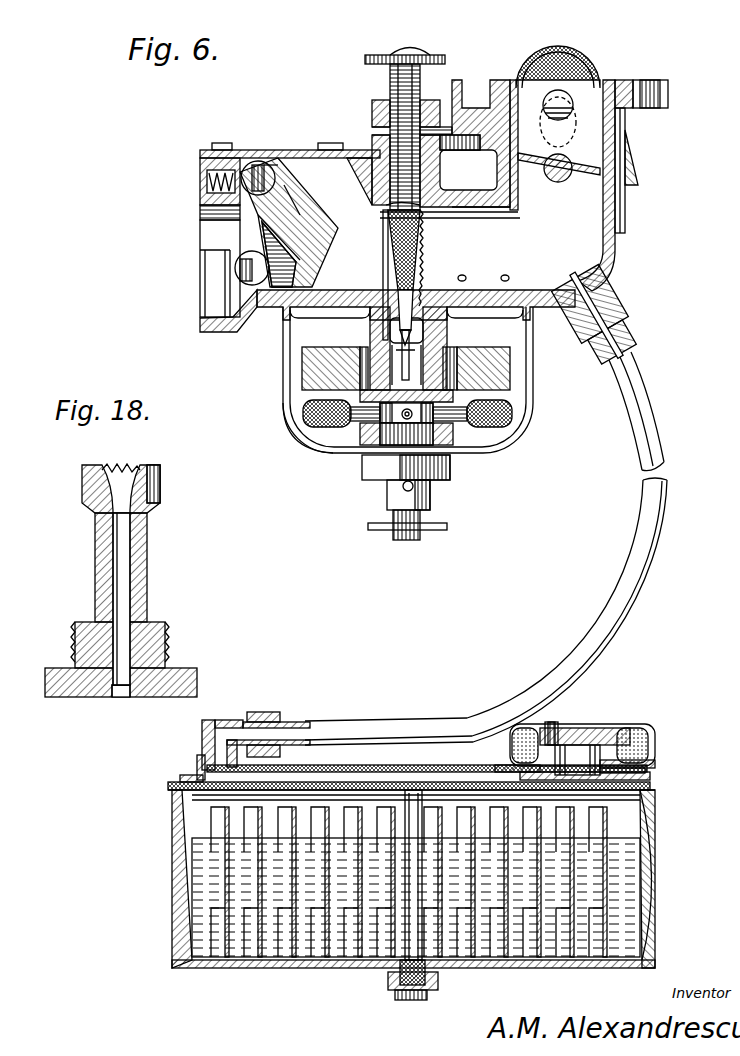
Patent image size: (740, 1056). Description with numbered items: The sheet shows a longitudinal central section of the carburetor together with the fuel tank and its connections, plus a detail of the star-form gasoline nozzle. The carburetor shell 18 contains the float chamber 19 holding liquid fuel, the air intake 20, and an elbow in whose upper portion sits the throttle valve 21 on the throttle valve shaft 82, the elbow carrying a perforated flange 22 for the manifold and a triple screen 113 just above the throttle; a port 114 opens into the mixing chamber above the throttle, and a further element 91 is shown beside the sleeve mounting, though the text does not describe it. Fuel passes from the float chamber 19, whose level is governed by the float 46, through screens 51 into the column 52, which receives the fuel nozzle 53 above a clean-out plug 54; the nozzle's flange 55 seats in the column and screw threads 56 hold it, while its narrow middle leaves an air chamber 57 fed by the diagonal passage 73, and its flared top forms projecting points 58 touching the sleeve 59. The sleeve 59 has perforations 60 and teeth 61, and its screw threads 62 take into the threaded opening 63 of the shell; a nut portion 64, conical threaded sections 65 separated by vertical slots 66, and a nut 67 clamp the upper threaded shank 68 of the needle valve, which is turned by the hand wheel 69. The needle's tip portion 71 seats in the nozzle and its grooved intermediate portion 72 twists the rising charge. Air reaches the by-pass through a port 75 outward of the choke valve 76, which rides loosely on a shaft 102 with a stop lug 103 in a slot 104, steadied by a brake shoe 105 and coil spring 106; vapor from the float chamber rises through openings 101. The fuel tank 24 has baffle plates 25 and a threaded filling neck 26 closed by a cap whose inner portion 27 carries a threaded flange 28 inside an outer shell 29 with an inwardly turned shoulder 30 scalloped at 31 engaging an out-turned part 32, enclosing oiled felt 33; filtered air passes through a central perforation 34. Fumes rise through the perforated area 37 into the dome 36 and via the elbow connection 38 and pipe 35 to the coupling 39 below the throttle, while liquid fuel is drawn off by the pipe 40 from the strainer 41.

In FIG. 6, the carburetor shell 18 is at (215, 332).
In FIG. 6, the float chamber 19 is at (285, 412).
In FIG. 6, the air intake 20 is at (205, 296).
In FIG. 6, the throttle valve 21 is at (627, 196).
In FIG. 6, the perforated flange 22 is at (668, 82).
In FIG. 6, the fuel tank 24 is at (332, 968).
In FIG. 6, the baffle plates 25 is at (328, 958).
In FIG. 6, the threaded filling neck 26 is at (650, 775).
In FIG. 6, the inner portion 27 is at (625, 724).
In FIG. 6, the threaded flange 28 is at (640, 726).
In FIG. 6, the outer shell 29 is at (568, 722).
In FIG. 6, the inwardly turned shoulder 30 is at (645, 758).
In FIG. 6, the scallops 31 is at (648, 766).
In FIG. 6, the out-turned part 32 is at (510, 766).
In FIG. 6, the oiled felt 33 is at (520, 735).
In FIG. 6, the central perforation 34 is at (588, 728).
In FIG. 6, the pipe 35 is at (660, 490).
In FIG. 6, the dome 36 is at (385, 765).
In FIG. 6, the perforated area 37 is at (340, 782).
In FIG. 6, the elbow connection 38 is at (212, 718).
In FIG. 6, the coupling 39 is at (625, 296).
In FIG. 6, the pipe 40 is at (414, 790).
In FIG. 6, the strainer 41 is at (400, 985).
In FIG. 6, the float 46 is at (538, 395).
In FIG. 6, the screens 51 is at (303, 436).
In FIG. 6, the column 52 is at (362, 458).
In FIG. 6, the fuel nozzle 53 is at (430, 470).
In FIG. 18, the fuel nozzle 53 is at (165, 630).
In FIG. 6, the clean-out plug 54 is at (425, 490).
In FIG. 6, the flange 55 is at (300, 398).
In FIG. 18, the flange 55 is at (50, 668).
In FIG. 6, the screw threads 56 is at (470, 375).
In FIG. 6, the air chamber 57 is at (455, 355).
In FIG. 6, the projecting points 58 is at (372, 339).
In FIG. 18, the projecting points 58 is at (118, 462).
In FIG. 6, the sleeve 59 is at (382, 275).
In FIG. 6, the perforations 60 is at (385, 216).
In FIG. 6, the teeth 61 is at (422, 256).
In FIG. 6, the screw threads 62 is at (380, 205).
In FIG. 6, the threaded opening 63 is at (444, 176).
In FIG. 6, the nut portion 64 is at (372, 145).
In FIG. 6, the conical threaded sections 65 is at (430, 100).
In FIG. 6, the vertical slots 66 is at (372, 130).
In FIG. 6, the nut 67 is at (372, 105).
In FIG. 6, the upper threaded shank 68 is at (358, 178).
In FIG. 6, the hand wheel 69 is at (428, 52).
In FIG. 6, the tip portion 71 is at (372, 322).
In FIG. 6, the intermediate portion 72 is at (424, 264).
In FIG. 6, the diagonal passage 73 is at (302, 375).
In FIG. 6, the port 75 is at (235, 268).
In FIG. 6, the choke valve 76 is at (305, 215).
In FIG. 6, the throttle valve shaft 82 is at (565, 185).
In FIG. 6, the insert 91 is at (460, 138).
In FIG. 6, the openings 101 is at (506, 275).
In FIG. 6, the shaft 102 is at (272, 168).
In FIG. 6, the stop lug 103 is at (258, 162).
In FIG. 6, the slot 104 is at (286, 180).
In FIG. 6, the brake shoe 105 is at (228, 150).
In FIG. 6, the coil spring 106 is at (208, 184).
In FIG. 6, the triple screen 113 is at (590, 60).
In FIG. 6, the port 114 is at (572, 106).